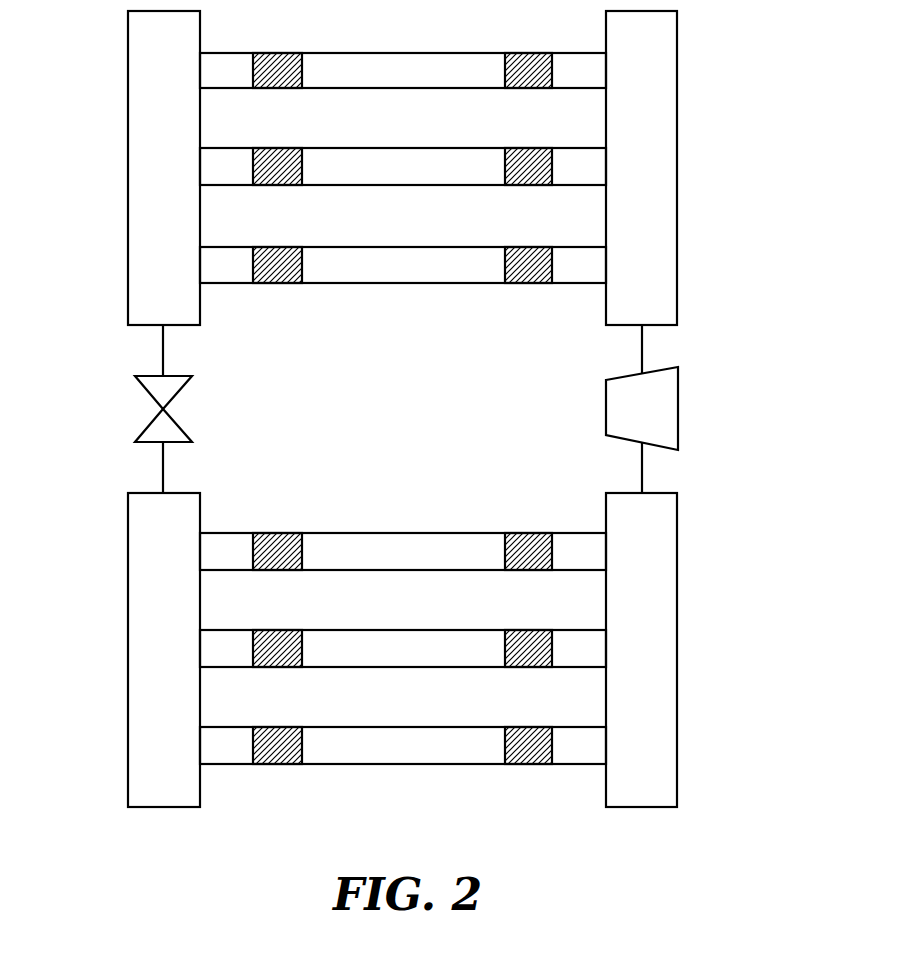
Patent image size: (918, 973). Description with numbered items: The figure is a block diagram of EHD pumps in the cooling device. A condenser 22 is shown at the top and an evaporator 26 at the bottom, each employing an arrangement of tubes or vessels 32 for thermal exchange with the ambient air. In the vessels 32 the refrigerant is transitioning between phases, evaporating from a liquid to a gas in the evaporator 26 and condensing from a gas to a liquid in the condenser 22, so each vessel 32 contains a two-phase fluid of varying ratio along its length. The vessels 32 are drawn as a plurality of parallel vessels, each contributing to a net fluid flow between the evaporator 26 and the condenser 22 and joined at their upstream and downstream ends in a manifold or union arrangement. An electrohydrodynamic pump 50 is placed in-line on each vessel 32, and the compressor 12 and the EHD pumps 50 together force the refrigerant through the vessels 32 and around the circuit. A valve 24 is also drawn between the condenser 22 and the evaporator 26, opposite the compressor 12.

The compressor 12 is at (680, 408).
The condenser 22 is at (719, 112).
The expansion valve 24 is at (158, 410).
The evaporator 26 is at (719, 649).
The vessels 32 is at (368, 163).
The electrohydrodynamic (EHD) pump 50 is at (283, 160).